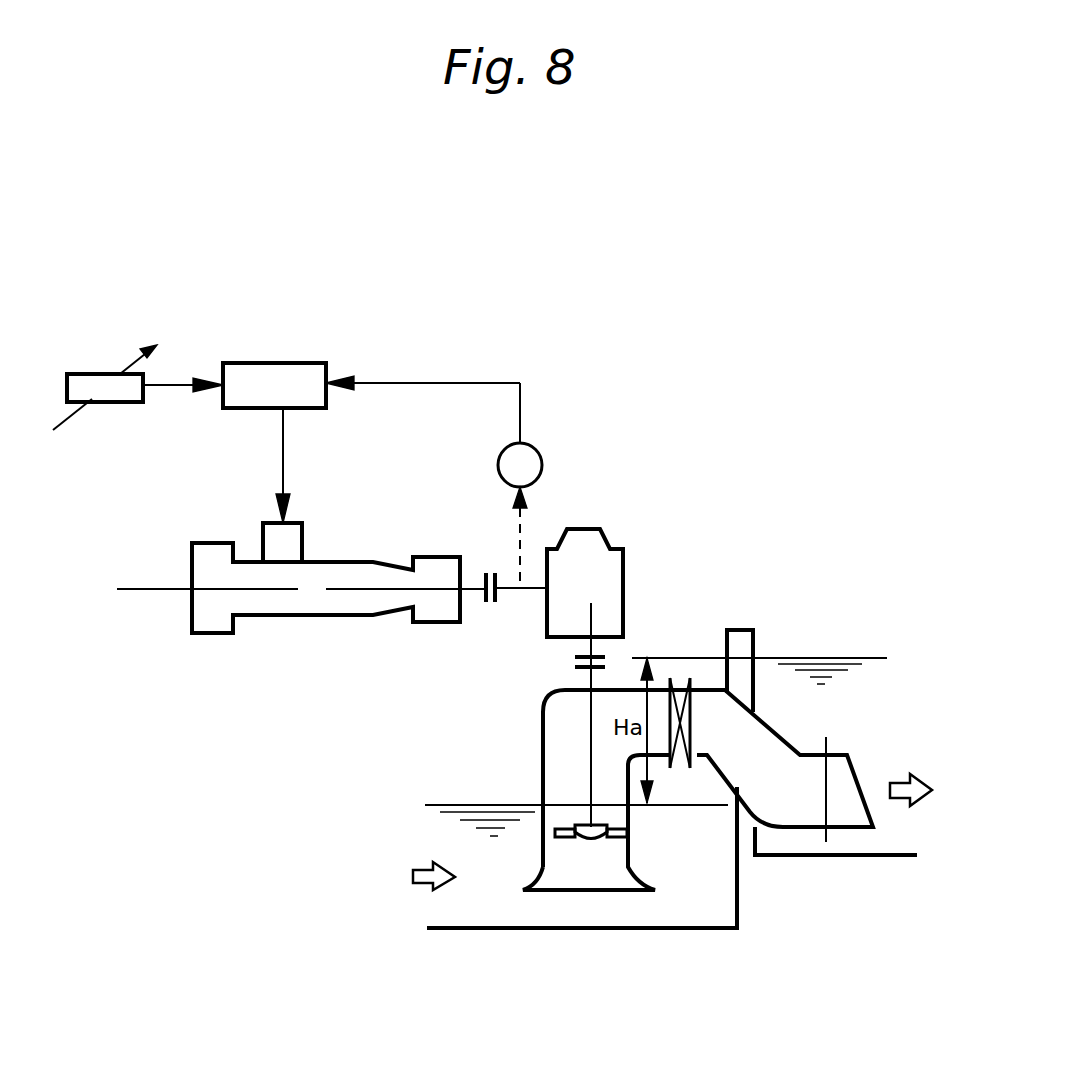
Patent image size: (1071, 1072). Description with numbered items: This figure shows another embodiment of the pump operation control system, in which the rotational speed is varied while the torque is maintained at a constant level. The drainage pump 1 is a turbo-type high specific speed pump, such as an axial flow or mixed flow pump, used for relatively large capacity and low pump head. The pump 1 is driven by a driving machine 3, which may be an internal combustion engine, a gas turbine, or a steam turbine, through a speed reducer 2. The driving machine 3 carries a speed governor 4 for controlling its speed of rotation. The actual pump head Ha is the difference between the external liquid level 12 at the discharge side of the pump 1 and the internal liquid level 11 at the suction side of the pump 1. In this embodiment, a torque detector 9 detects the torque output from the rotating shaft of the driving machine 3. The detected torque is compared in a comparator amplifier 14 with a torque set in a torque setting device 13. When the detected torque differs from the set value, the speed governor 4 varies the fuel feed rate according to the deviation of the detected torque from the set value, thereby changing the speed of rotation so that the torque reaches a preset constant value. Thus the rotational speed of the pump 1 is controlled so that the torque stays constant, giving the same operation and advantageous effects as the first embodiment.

The drainage pump 1 is at (630, 845).
The speed reducer 2 is at (623, 600).
The driving machine 3 is at (318, 615).
The speed governor 4 is at (302, 535).
The torque detector 9 is at (541, 460).
The internal liquid level 11 is at (476, 805).
The external liquid level 12 is at (820, 657).
The torque setting device 13 is at (108, 402).
The comparator amplifier 14 is at (301, 363).